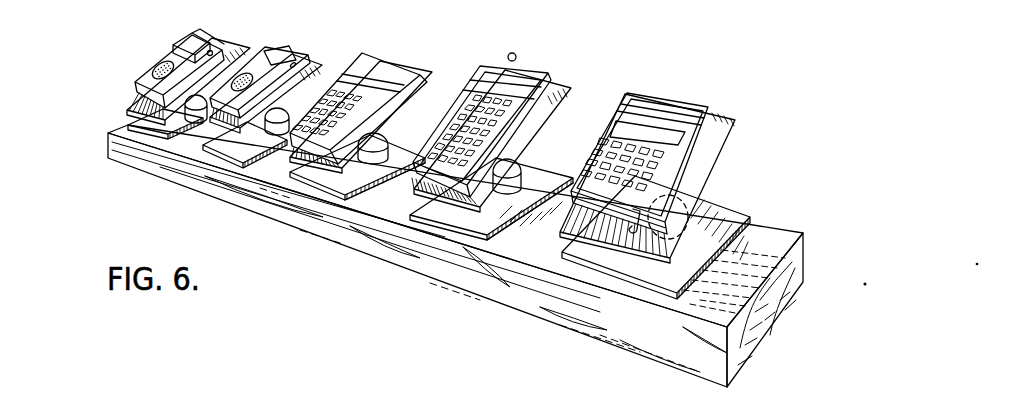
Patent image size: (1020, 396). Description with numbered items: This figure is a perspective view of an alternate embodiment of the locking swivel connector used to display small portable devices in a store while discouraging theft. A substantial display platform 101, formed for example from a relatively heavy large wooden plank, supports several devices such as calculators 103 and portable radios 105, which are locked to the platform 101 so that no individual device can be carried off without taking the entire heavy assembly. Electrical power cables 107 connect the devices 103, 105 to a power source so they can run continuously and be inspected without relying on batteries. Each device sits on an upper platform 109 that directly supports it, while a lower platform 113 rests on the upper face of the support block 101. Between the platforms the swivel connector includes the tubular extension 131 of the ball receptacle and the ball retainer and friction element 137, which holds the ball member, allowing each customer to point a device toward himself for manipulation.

The display platform 101 is at (428, 276).
The calculator 103 is at (487, 60).
The portable radio 105 is at (285, 43).
The electrical power cable 107 is at (514, 55).
The upper platform 109 is at (330, 48).
The lower platform 113 is at (203, 153).
The tubular extension 131 is at (352, 186).
The ball retainer and friction element 137 is at (390, 131).